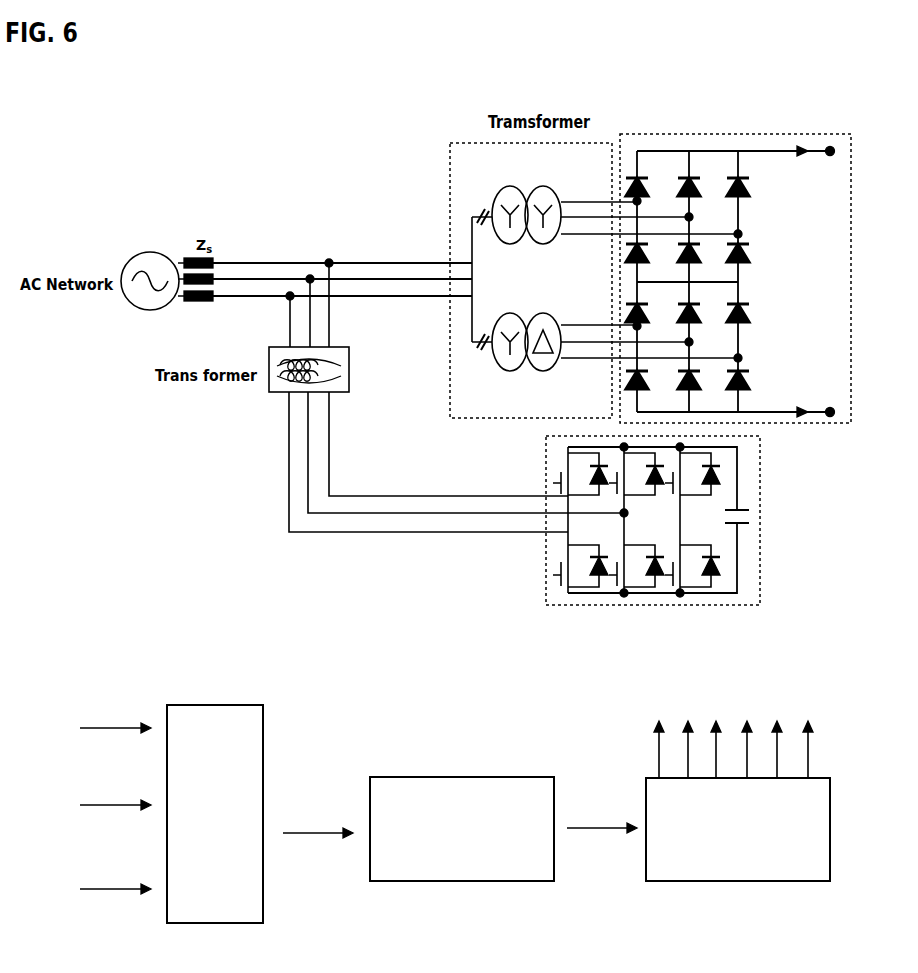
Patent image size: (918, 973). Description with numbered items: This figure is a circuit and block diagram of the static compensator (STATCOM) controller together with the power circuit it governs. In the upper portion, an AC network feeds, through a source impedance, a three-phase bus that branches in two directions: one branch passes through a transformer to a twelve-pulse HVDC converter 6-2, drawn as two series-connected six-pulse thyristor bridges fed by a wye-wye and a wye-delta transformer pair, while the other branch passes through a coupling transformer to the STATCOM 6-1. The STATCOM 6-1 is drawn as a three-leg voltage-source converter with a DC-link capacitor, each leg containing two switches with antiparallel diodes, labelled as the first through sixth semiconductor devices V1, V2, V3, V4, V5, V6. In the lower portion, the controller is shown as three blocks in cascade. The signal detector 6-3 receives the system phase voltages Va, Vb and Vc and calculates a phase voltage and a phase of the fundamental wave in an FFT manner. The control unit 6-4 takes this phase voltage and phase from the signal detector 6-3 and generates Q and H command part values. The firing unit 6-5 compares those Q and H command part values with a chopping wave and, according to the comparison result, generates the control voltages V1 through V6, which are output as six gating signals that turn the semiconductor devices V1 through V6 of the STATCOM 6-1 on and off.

The STATCOM 6-1 is at (664, 536).
The HVDC 12 pulse converter 6-2 is at (755, 265).
The signal detector 6-3 is at (171, 830).
The control unit 6-4 is at (462, 845).
The firing unit 6-5 is at (738, 809).
The first semiconductor device V1 is at (569, 474).
The second semiconductor device V2 is at (711, 566).
The third semiconductor device V3 is at (636, 474).
The fourth semiconductor device V4 is at (569, 566).
The fifth semiconductor device V5 is at (711, 474).
The sixth semiconductor device V6 is at (636, 566).